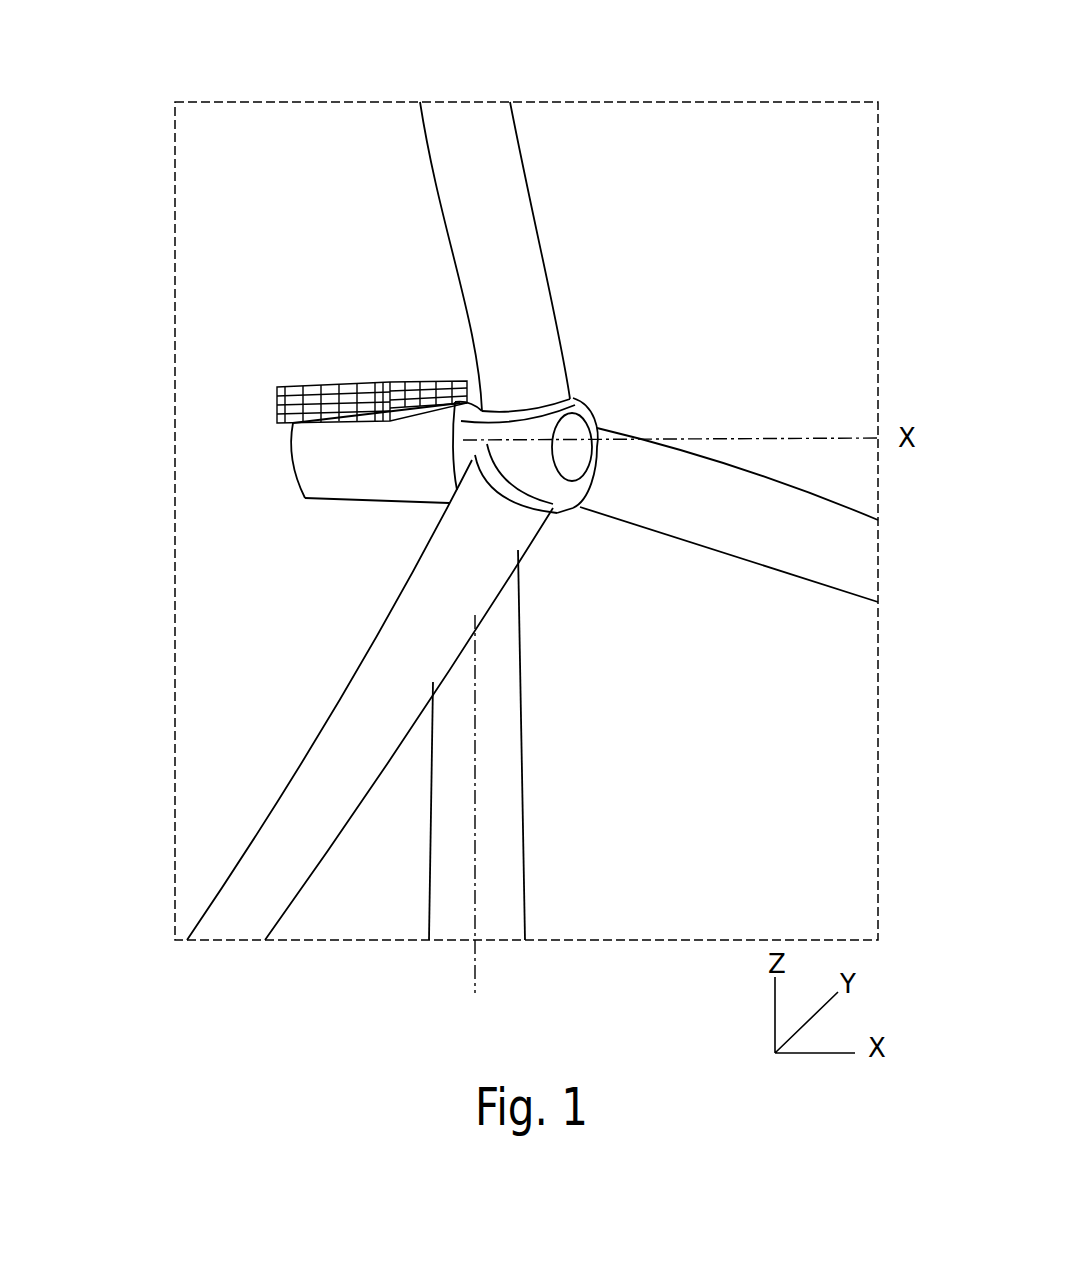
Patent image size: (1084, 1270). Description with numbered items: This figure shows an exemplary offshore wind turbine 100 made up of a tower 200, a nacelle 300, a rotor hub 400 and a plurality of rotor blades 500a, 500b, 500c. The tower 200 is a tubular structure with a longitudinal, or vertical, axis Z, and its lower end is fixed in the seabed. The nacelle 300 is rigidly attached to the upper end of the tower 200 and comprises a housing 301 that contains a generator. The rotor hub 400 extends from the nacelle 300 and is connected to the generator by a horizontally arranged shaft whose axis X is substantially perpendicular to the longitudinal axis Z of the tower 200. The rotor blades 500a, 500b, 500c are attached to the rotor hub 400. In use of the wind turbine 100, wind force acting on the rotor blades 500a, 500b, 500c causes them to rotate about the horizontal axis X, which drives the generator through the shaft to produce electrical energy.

The offshore wind turbine 100 is at (609, 244).
The tower 200 is at (502, 773).
The nacelle 300 is at (334, 370).
The housing 301 is at (320, 467).
The rotor hub 400 is at (579, 438).
The rotor blade 500a is at (467, 128).
The rotor blade 500b is at (760, 528).
The rotor blade 500c is at (278, 878).